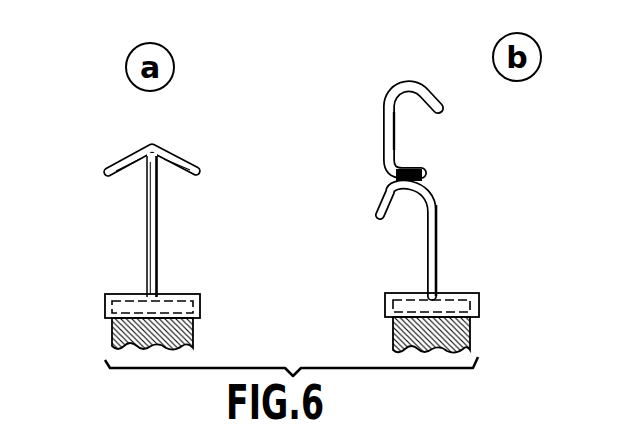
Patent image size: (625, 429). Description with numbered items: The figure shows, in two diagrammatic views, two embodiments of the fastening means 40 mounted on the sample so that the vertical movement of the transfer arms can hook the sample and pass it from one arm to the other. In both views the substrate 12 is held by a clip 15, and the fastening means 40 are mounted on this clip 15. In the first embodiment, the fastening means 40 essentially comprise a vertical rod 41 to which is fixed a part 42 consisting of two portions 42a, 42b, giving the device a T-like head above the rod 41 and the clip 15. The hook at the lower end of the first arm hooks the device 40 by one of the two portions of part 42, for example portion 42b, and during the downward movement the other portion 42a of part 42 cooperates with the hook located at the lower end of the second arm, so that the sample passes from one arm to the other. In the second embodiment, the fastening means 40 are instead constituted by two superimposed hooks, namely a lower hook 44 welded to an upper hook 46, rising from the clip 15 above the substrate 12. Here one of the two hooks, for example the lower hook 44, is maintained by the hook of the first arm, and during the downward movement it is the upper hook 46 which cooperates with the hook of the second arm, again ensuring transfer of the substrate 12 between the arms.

The substrate 12 is at (132, 330).
The clip 15 is at (130, 295).
The fastening means 40 is at (297, 198).
The vertical rod 41 is at (150, 199).
The part 42 is at (160, 164).
The portion 42a is at (110, 167).
The portion 42b is at (200, 174).
The lower hook 44 is at (428, 246).
The upper hook 46 is at (395, 87).